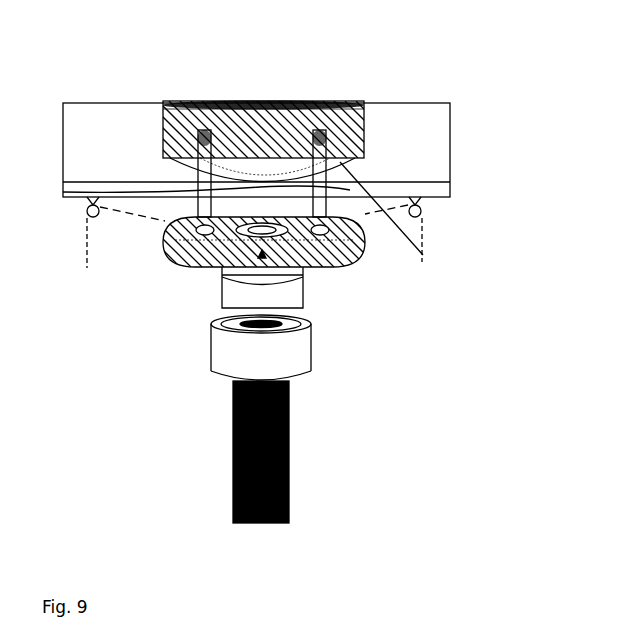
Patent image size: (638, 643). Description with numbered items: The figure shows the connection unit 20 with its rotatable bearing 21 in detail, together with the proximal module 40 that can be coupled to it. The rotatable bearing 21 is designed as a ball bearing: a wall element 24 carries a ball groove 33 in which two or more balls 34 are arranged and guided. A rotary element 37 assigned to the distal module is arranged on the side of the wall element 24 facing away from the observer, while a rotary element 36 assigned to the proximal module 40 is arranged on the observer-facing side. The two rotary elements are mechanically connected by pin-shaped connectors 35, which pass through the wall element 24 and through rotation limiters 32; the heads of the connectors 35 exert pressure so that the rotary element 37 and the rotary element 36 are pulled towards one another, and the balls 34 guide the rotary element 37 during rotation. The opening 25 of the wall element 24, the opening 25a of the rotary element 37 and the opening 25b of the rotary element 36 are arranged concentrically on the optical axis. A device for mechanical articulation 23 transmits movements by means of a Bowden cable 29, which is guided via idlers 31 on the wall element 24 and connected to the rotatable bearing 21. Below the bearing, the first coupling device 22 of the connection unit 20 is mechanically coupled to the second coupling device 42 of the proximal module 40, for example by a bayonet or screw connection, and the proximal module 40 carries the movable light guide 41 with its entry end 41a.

The connection unit 20 is at (523, 84).
The rotatable bearing 21 is at (163, 124).
The first coupling device 22 is at (228, 297).
The device for mechanical articulation 23 is at (458, 203).
The idlers 31 is at (424, 218).
The wall element 24 is at (415, 128).
The opening 25 is at (248, 101).
The opening of the rotary element assigned to the distal module 25a is at (256, 103).
The opening of the rotary element assigned to the proximal module 25b is at (358, 256).
The Bowden cable 29 is at (86, 244).
The rotation limiters 32 is at (265, 168).
The ball groove 33 is at (265, 168).
The balls 34 is at (423, 255).
The connectors 35 is at (63, 192).
The rotary element assigned to the proximal module 36 is at (318, 270).
The rotary element assigned to the distal module 37 is at (220, 103).
The proximal module 40 is at (475, 328).
The movable light guide 41 is at (233, 430).
The entry end 41a is at (307, 320).
The second coupling device 42 is at (232, 355).